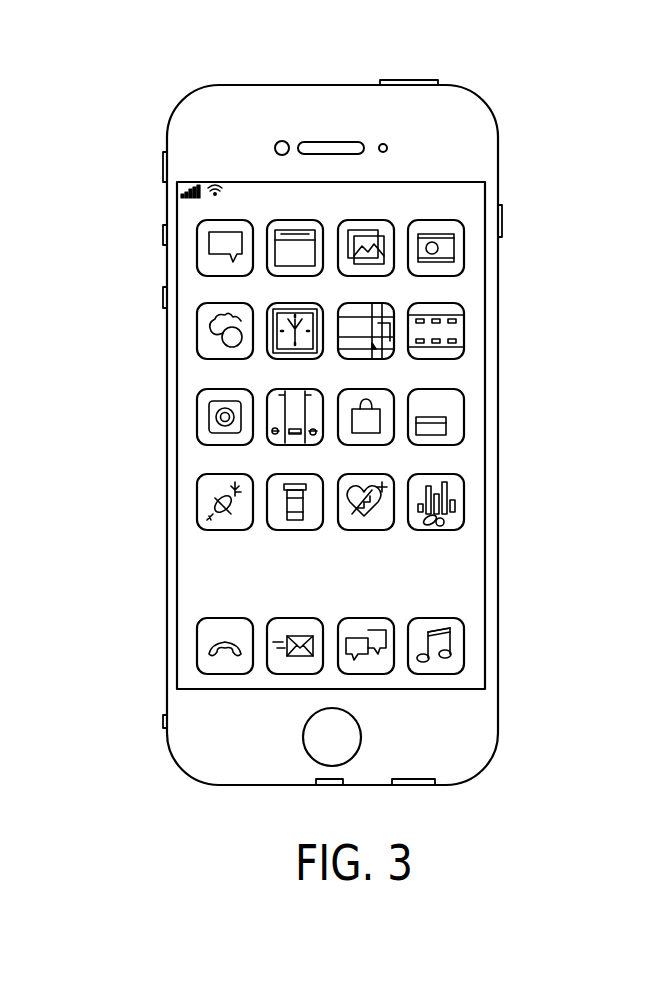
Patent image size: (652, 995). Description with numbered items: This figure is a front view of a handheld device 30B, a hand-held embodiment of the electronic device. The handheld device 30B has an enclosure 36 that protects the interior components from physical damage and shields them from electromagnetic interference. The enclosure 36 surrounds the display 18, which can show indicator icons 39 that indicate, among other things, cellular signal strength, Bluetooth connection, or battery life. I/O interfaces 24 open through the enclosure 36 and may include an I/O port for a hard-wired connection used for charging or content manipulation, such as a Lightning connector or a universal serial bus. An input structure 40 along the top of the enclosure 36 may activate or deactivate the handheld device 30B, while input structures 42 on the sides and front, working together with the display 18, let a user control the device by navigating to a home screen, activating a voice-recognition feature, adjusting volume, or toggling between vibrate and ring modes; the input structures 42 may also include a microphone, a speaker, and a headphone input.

The handheld device 30B is at (156, 75).
The enclosure 36 is at (499, 165).
The input structure 40 is at (409, 80).
The input structures 42 is at (163, 297).
The indicator icons 39 is at (215, 183).
The I/O interfaces 24 is at (325, 789).
The display 18 is at (487, 575).